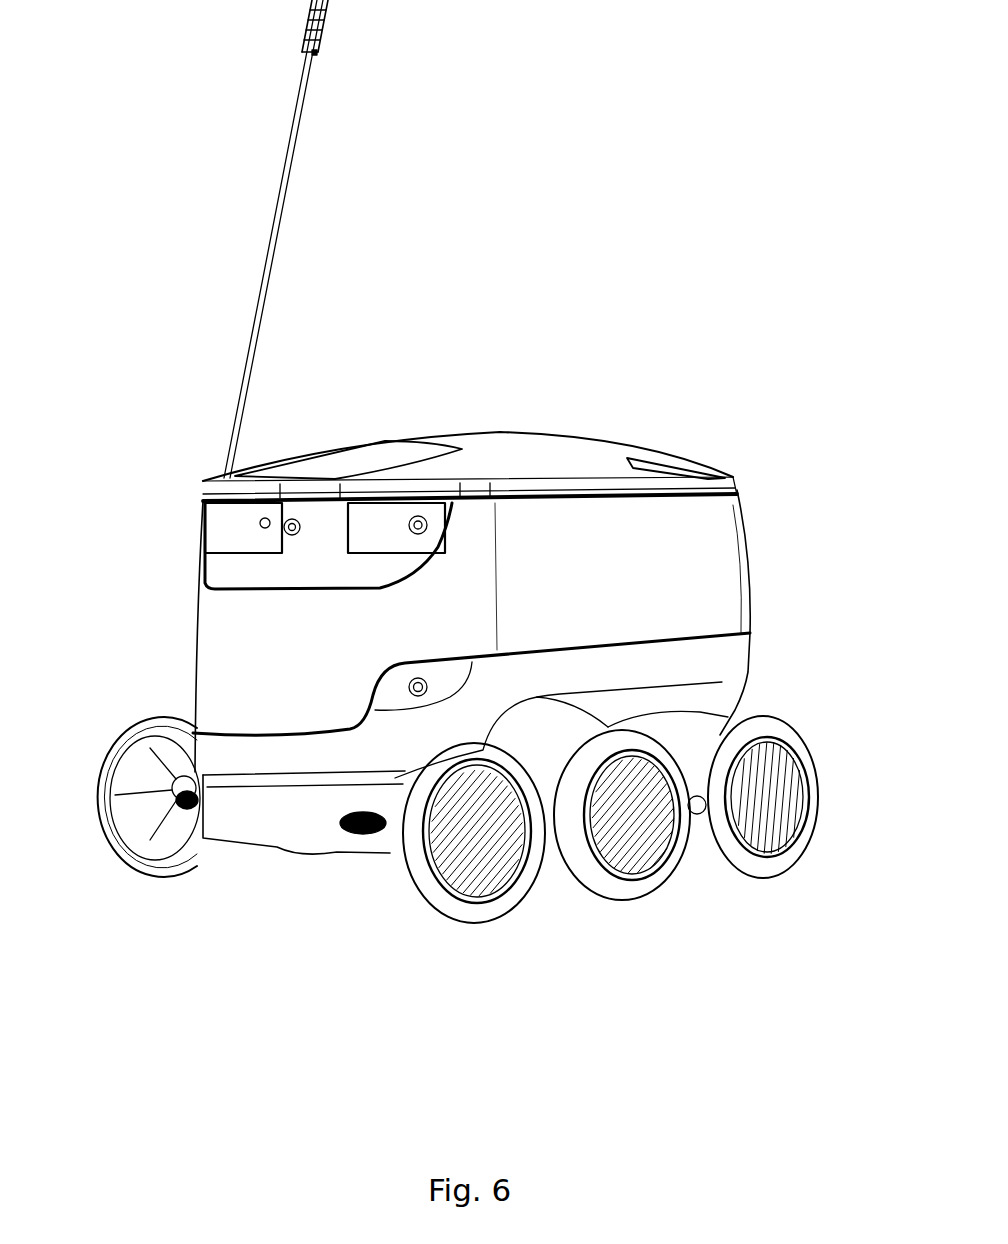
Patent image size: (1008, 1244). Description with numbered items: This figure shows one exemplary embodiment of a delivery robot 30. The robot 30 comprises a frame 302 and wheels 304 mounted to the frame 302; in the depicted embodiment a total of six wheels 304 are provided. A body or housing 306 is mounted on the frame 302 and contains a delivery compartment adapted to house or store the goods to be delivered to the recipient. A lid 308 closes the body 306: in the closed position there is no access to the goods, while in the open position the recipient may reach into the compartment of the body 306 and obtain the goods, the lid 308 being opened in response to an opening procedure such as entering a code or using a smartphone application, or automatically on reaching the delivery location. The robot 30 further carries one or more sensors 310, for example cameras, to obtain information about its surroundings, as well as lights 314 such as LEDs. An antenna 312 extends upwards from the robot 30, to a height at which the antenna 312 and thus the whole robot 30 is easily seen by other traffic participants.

The robot 30 is at (480, 338).
The frame 302 is at (277, 836).
The wheels 304 is at (629, 930).
The body or housing 306 is at (663, 555).
The lid 308 is at (546, 438).
The sensors 310 is at (272, 540).
The antenna 312 is at (267, 42).
The lights 314 is at (187, 838).